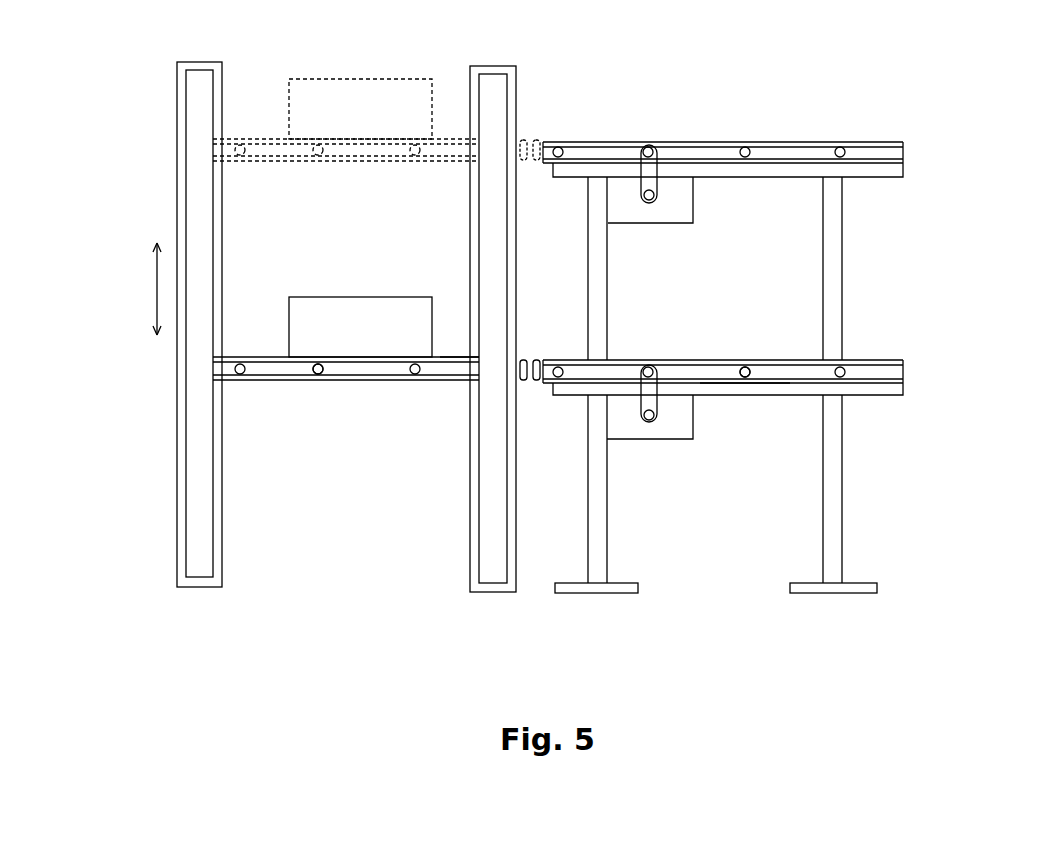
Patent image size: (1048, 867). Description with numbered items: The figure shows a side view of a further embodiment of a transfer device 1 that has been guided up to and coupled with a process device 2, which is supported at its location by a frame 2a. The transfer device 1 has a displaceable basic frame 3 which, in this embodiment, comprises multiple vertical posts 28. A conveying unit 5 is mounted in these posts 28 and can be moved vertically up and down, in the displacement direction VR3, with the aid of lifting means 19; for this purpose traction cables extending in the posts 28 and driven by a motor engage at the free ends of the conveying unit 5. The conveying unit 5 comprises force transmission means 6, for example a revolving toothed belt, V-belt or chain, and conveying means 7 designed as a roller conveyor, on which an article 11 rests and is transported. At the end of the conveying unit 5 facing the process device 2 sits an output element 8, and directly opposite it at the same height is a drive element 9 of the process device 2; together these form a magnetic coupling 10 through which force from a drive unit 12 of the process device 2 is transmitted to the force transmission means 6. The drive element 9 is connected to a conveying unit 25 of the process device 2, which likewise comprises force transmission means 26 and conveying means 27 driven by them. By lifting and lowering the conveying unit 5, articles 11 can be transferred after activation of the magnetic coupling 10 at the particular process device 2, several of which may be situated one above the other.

The transfer device 1 is at (152, 77).
The process device 2 is at (779, 315).
The frame 2a is at (832, 470).
The basic frame 3 is at (165, 573).
The conveying unit 5 is at (268, 398).
The force transmission means 6 is at (450, 378).
The conveying means 7 is at (320, 382).
The output element 8 is at (523, 360).
The drive element 9 is at (540, 360).
The magnetic coupling 10 is at (539, 124).
The article 11 is at (360, 218).
The drive unit 12 is at (672, 223).
The lifting means 19 is at (157, 376).
The conveying unit 25 is at (920, 165).
The force transmission means 26 is at (790, 360).
The conveying means 27 is at (742, 395).
The vertical posts 28 is at (195, 480).
The displacement direction VR3 is at (155, 270).